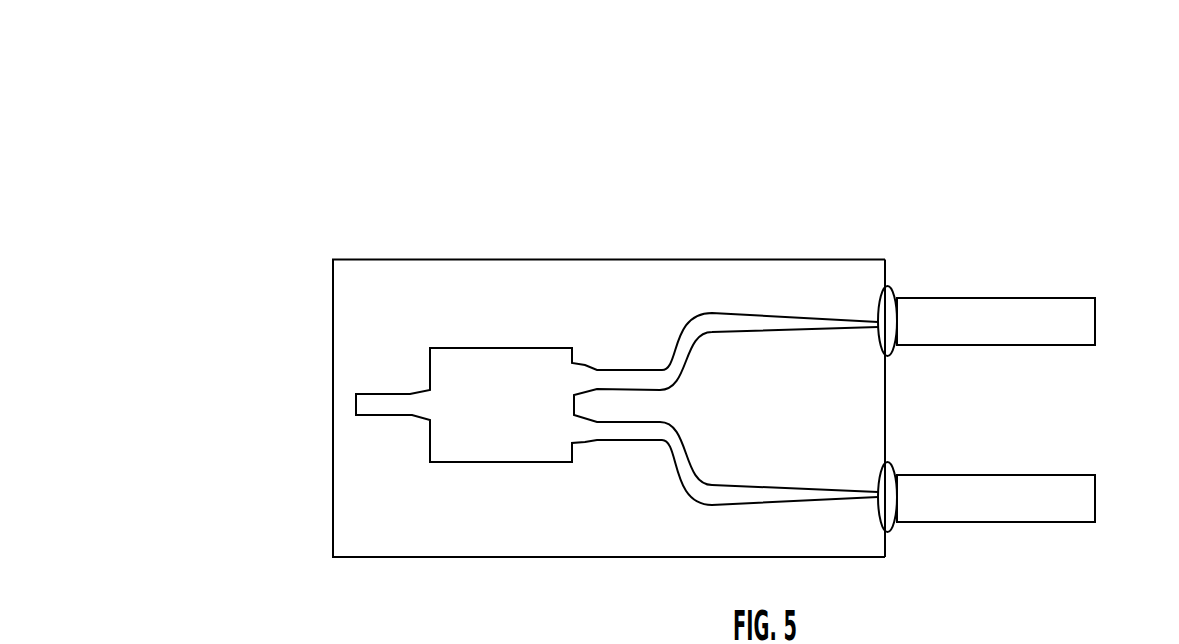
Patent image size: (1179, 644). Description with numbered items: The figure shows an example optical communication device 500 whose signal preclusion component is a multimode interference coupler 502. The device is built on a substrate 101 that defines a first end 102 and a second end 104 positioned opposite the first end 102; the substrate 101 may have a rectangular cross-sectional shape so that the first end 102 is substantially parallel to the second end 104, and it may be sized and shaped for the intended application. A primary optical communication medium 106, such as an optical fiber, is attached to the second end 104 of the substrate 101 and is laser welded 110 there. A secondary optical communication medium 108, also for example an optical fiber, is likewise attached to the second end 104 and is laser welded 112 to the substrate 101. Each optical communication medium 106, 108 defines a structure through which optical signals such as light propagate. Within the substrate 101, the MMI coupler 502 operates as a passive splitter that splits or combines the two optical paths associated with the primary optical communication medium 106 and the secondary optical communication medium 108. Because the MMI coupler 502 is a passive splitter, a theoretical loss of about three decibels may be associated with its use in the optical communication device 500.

The optical communication device 500 is at (118, 103).
The substrate 101 is at (318, 233).
The first end 102 is at (332, 303).
The second end 104 is at (886, 273).
The primary optical communication medium 106 is at (1098, 317).
The secondary optical communication medium 108 is at (1098, 482).
The weld 110 is at (894, 358).
The weld 112 is at (894, 531).
The multimode interference (MMI) coupler 502 is at (457, 435).